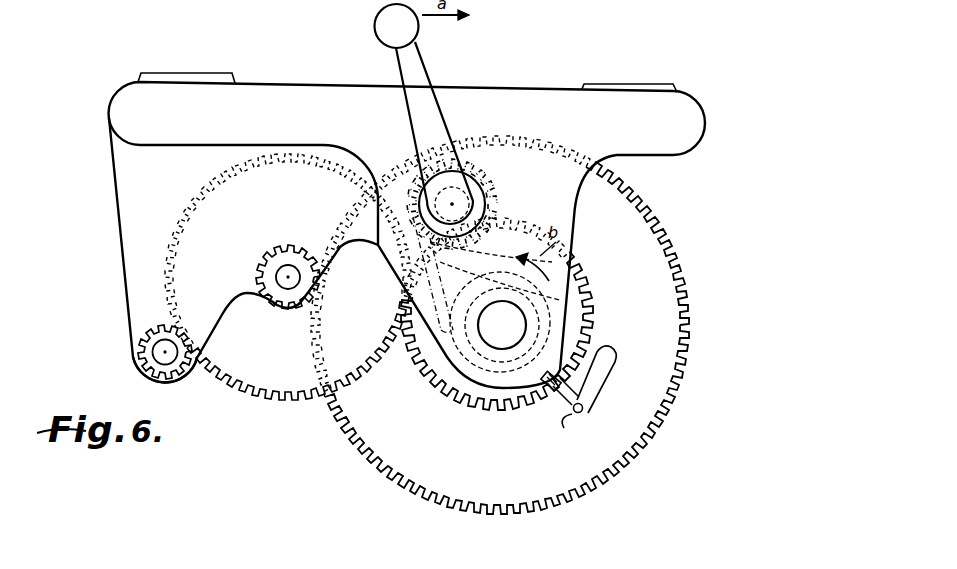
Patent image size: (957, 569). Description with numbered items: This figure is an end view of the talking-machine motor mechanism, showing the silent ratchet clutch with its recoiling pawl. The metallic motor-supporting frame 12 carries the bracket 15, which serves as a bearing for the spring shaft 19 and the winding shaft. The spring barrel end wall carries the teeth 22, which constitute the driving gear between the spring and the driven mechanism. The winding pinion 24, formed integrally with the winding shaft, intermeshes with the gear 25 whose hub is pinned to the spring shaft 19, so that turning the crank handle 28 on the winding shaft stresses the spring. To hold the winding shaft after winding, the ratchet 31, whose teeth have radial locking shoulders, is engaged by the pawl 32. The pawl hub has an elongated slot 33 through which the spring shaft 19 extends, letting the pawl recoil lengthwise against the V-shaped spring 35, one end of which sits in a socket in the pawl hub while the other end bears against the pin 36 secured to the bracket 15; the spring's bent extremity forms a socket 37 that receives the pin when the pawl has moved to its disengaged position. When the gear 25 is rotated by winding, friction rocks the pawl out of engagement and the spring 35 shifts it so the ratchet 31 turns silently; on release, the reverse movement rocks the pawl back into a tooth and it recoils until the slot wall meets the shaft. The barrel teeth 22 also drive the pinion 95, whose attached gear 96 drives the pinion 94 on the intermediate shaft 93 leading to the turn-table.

The metallic motor-supporting frame 12 is at (331, 93).
The second bracket 15 is at (503, 372).
The spring shaft 19 is at (502, 325).
The teeth of the barrel end wall 22 is at (393, 457).
The winding pinion 24 is at (496, 217).
The gear 25 is at (578, 302).
The crank handle 28 is at (418, 71).
The ratchet 31 is at (413, 201).
The pawl 32 is at (462, 300).
The elongated slot 33 is at (532, 337).
The spring 35 is at (590, 370).
The pin 36 is at (582, 411).
The socket 37 is at (567, 430).
The intermediate shaft 93 is at (158, 352).
The pinion 94 is at (173, 371).
The pinion 95 is at (289, 307).
The gear 96 is at (271, 387).